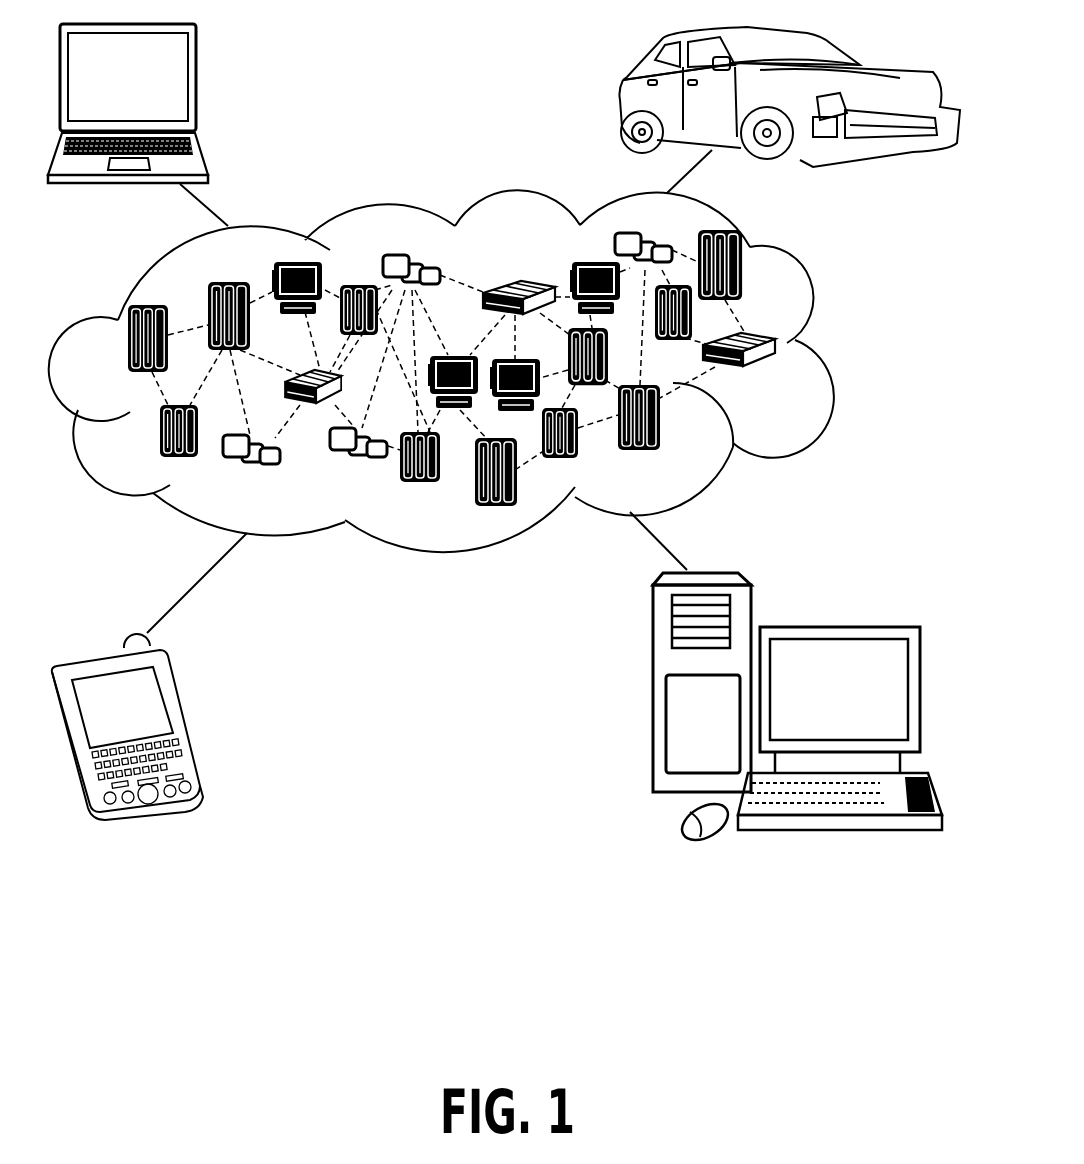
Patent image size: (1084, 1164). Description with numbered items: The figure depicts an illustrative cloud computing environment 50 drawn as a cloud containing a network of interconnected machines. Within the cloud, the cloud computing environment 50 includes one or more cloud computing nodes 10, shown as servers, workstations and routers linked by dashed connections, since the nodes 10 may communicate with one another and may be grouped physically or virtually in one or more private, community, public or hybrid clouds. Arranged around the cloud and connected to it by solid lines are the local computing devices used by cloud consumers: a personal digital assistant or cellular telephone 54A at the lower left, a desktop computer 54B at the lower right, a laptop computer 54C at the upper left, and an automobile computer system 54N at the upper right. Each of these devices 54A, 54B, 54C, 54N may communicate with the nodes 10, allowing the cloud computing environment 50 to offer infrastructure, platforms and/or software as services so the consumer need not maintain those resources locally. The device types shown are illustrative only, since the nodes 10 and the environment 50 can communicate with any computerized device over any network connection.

The cloud computing nodes 10 is at (471, 391).
The cloud computing environment 50 is at (833, 347).
The personal digital assistant or cellular telephone 54A is at (185, 717).
The desktop computer 54B is at (836, 627).
The laptop computer 54C is at (197, 84).
The automobile computer system 54N is at (622, 100).